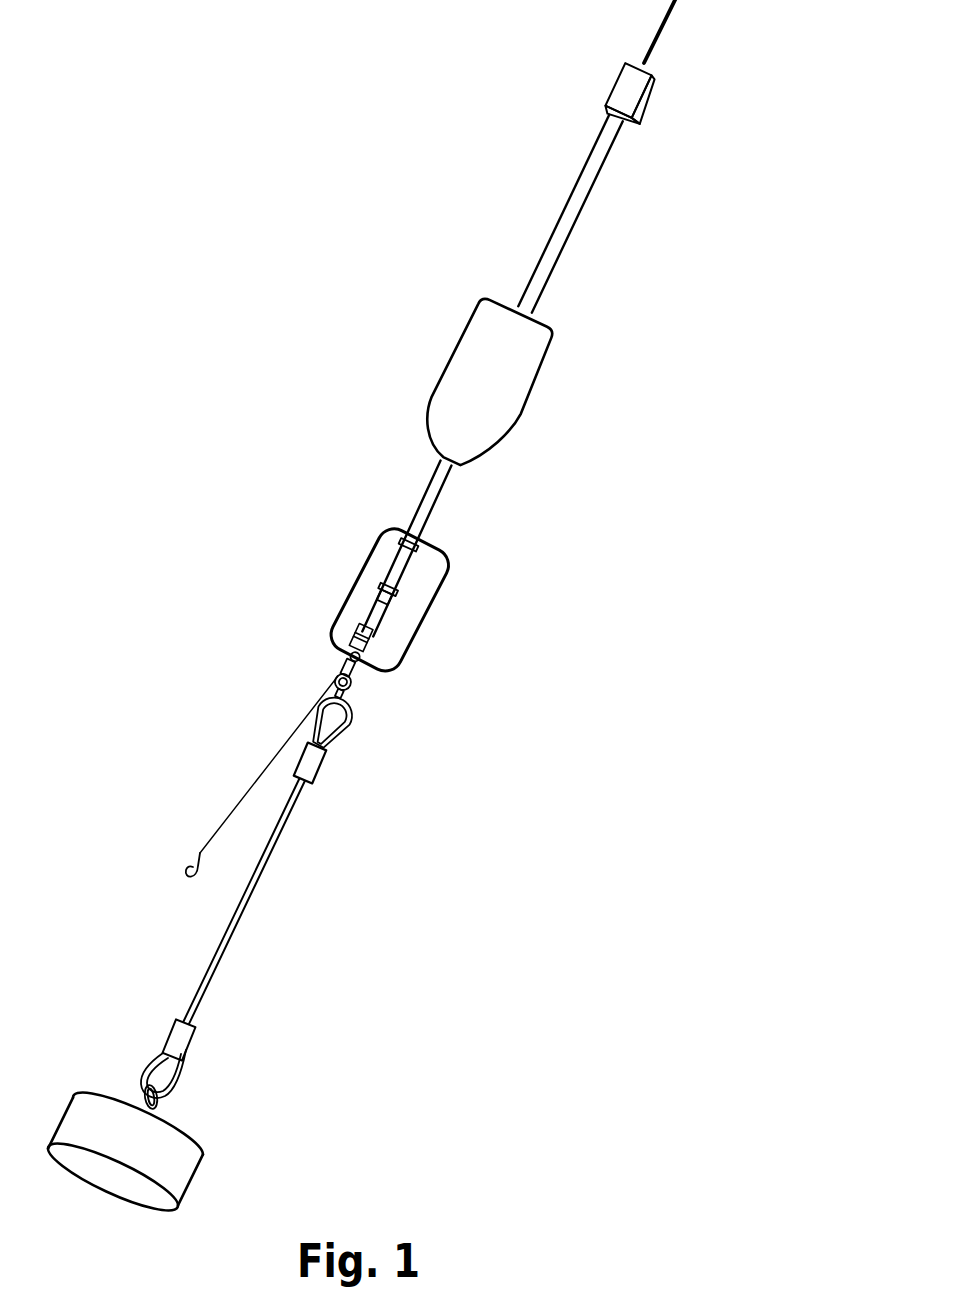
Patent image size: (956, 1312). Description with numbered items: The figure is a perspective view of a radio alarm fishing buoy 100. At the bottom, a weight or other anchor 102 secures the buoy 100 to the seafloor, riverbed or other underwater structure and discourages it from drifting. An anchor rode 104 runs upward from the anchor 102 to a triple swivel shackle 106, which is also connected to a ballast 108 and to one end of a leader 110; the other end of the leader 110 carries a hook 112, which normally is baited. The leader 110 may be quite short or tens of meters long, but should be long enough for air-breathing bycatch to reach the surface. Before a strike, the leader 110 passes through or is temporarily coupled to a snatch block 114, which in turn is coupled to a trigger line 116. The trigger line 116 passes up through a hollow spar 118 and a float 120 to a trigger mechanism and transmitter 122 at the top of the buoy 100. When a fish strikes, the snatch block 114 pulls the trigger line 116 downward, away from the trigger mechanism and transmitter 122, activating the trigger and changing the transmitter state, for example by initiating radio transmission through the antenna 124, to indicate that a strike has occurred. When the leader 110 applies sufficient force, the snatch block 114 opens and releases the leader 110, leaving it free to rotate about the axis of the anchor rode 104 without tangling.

The radio alarm fishing buoy 100 is at (402, 310).
The anchor 102 is at (97, 1094).
The anchor rode 104 is at (296, 806).
The triple swivel shackle 106 is at (358, 688).
The ballast 108 is at (420, 594).
The leader 110 is at (281, 745).
The hook 112 is at (197, 857).
The snatch block 114 is at (352, 633).
The trigger line 116 is at (358, 600).
The hollow spar 118 is at (575, 236).
The float 120 is at (532, 394).
The trigger mechanism and transmitter 122 is at (655, 94).
The antenna 124 is at (678, 12).